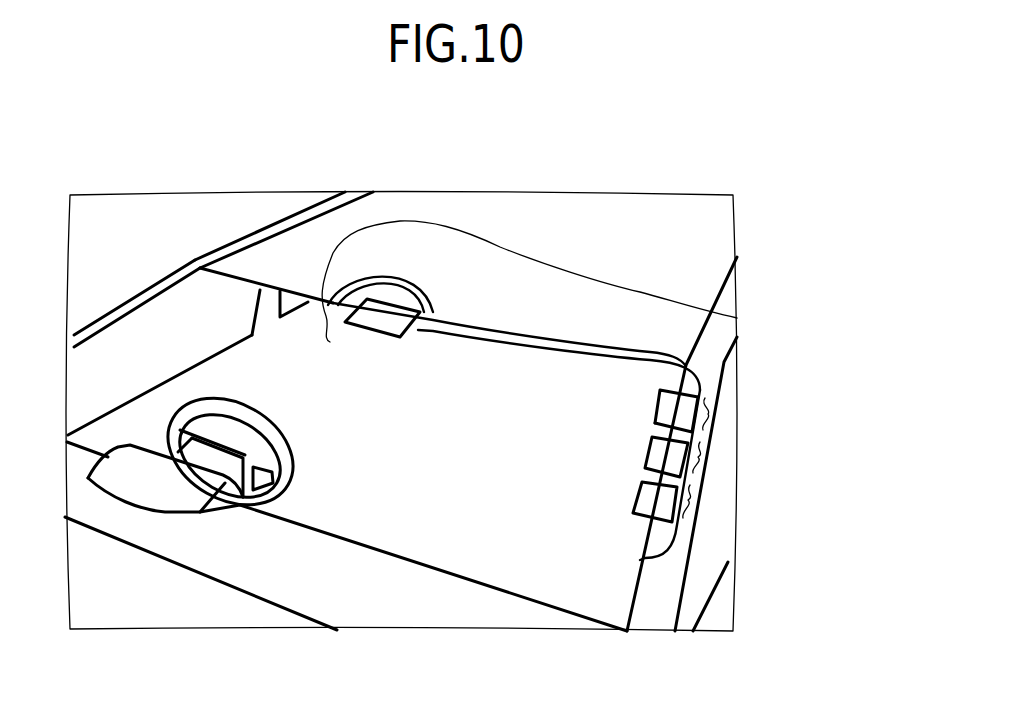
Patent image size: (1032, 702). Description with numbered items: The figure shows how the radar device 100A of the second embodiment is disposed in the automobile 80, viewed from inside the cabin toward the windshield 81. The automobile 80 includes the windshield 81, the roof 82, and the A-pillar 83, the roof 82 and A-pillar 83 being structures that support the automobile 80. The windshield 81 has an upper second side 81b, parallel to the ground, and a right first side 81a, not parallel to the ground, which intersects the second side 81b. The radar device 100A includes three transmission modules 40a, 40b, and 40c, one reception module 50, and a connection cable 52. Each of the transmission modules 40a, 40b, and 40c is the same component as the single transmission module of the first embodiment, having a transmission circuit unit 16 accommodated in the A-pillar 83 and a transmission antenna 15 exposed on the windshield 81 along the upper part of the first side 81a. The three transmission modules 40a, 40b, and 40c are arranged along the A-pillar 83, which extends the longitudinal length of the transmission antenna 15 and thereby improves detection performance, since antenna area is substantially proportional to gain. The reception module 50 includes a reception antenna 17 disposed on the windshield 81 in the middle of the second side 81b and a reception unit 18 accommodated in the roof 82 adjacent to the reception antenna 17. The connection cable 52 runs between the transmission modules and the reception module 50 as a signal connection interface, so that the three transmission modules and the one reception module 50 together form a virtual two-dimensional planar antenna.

The automobile 80 is at (671, 177).
The windshield 81 is at (145, 327).
The first side 81a is at (638, 592).
The second side 81b is at (235, 277).
The roof 82 is at (618, 220).
The A-pillar 83 is at (658, 537).
The reception module 50 is at (707, 313).
The connection cable 52 is at (565, 345).
The reception unit 18 is at (393, 308).
The reception antenna 17 is at (375, 327).
The transmission antenna 15 is at (670, 400).
The transmission circuit unit 16 is at (682, 407).
The transmission module 40a is at (698, 415).
The transmission module 40b is at (697, 457).
The transmission module 40c is at (718, 502).
The radar device 100A is at (737, 410).